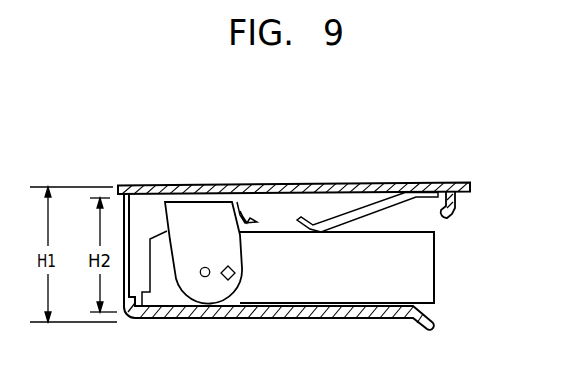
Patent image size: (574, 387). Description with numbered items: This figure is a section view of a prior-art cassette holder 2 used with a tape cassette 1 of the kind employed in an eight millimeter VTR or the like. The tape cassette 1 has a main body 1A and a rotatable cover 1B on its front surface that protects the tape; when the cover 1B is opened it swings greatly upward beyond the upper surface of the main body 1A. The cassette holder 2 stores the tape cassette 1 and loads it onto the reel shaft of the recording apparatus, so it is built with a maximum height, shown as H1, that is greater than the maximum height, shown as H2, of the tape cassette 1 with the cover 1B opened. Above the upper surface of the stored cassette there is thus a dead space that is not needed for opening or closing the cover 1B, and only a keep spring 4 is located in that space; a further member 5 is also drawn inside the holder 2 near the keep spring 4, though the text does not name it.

The tape cassette 1 is at (447, 279).
The main body 1A is at (428, 247).
The rotatable cover 1B is at (193, 210).
The cassette holder 2 is at (255, 185).
The keep spring 4 is at (423, 210).
The lever spring 5 is at (346, 206).